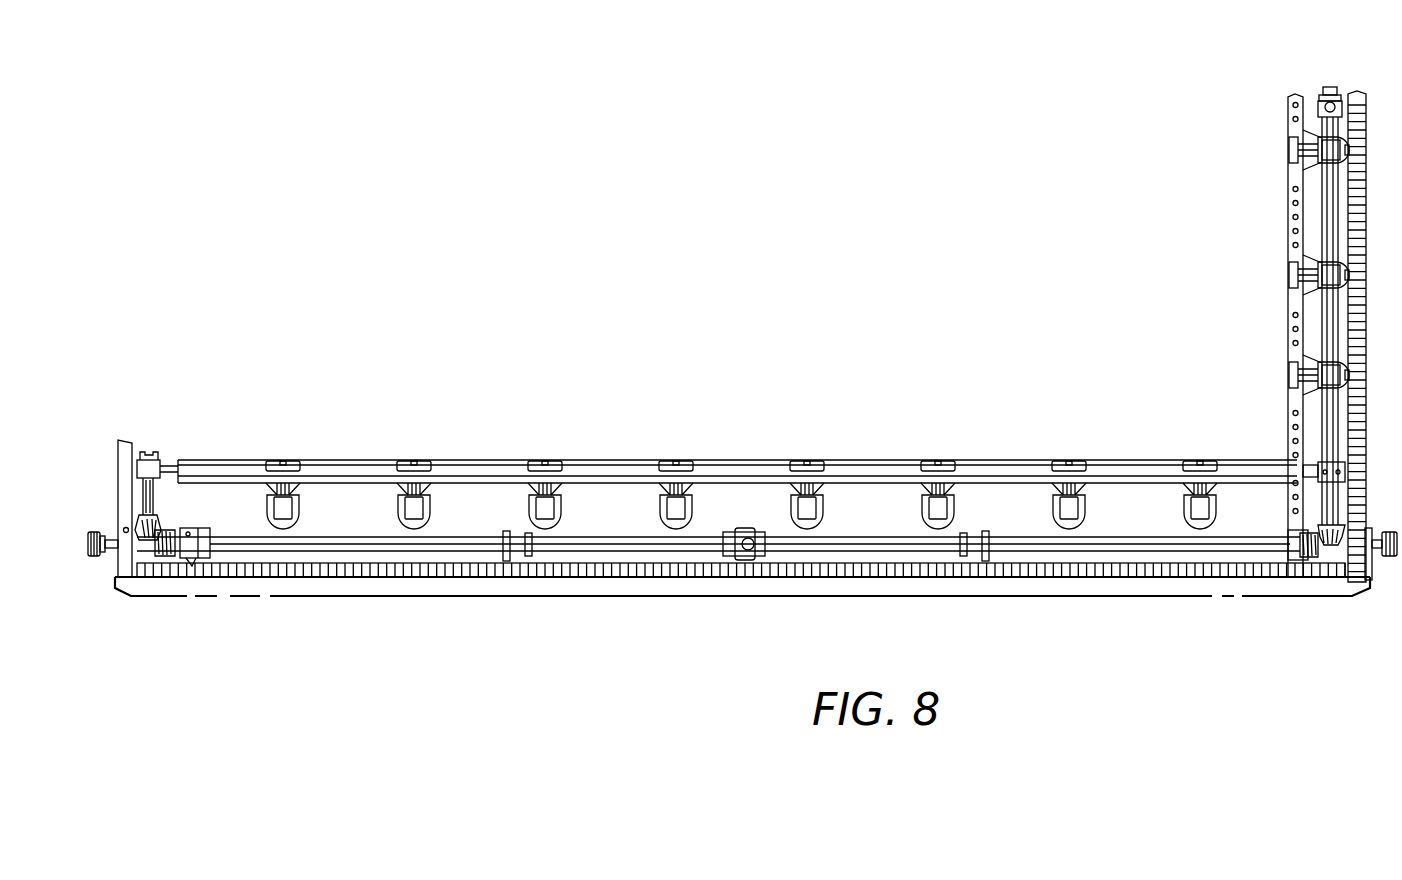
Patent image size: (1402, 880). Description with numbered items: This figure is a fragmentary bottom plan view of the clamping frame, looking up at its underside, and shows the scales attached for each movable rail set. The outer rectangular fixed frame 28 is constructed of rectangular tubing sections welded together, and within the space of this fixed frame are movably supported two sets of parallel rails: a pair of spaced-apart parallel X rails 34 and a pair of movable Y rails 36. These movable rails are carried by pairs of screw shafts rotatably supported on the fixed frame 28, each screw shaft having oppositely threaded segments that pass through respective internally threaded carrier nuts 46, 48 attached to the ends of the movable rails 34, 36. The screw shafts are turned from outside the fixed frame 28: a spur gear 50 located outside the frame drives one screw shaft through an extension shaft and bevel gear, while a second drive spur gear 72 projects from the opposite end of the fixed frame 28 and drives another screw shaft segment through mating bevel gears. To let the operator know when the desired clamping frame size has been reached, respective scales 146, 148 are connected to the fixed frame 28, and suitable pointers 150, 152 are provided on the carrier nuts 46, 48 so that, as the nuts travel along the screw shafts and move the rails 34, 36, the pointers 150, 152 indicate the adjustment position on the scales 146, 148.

The outer rectangular fixed frame 28 is at (112, 456).
The movable X rails 34 is at (610, 457).
The movable Y rails 36 is at (1282, 206).
The carrier nut 46 is at (186, 528).
The carrier nut 48 is at (1318, 470).
The spur gear 50 is at (1392, 558).
The second drive spur gear 72 is at (92, 558).
The scale 146 is at (1350, 90).
The scale 148 is at (466, 580).
The pointer 150 is at (1357, 468).
The pointer 152 is at (190, 564).